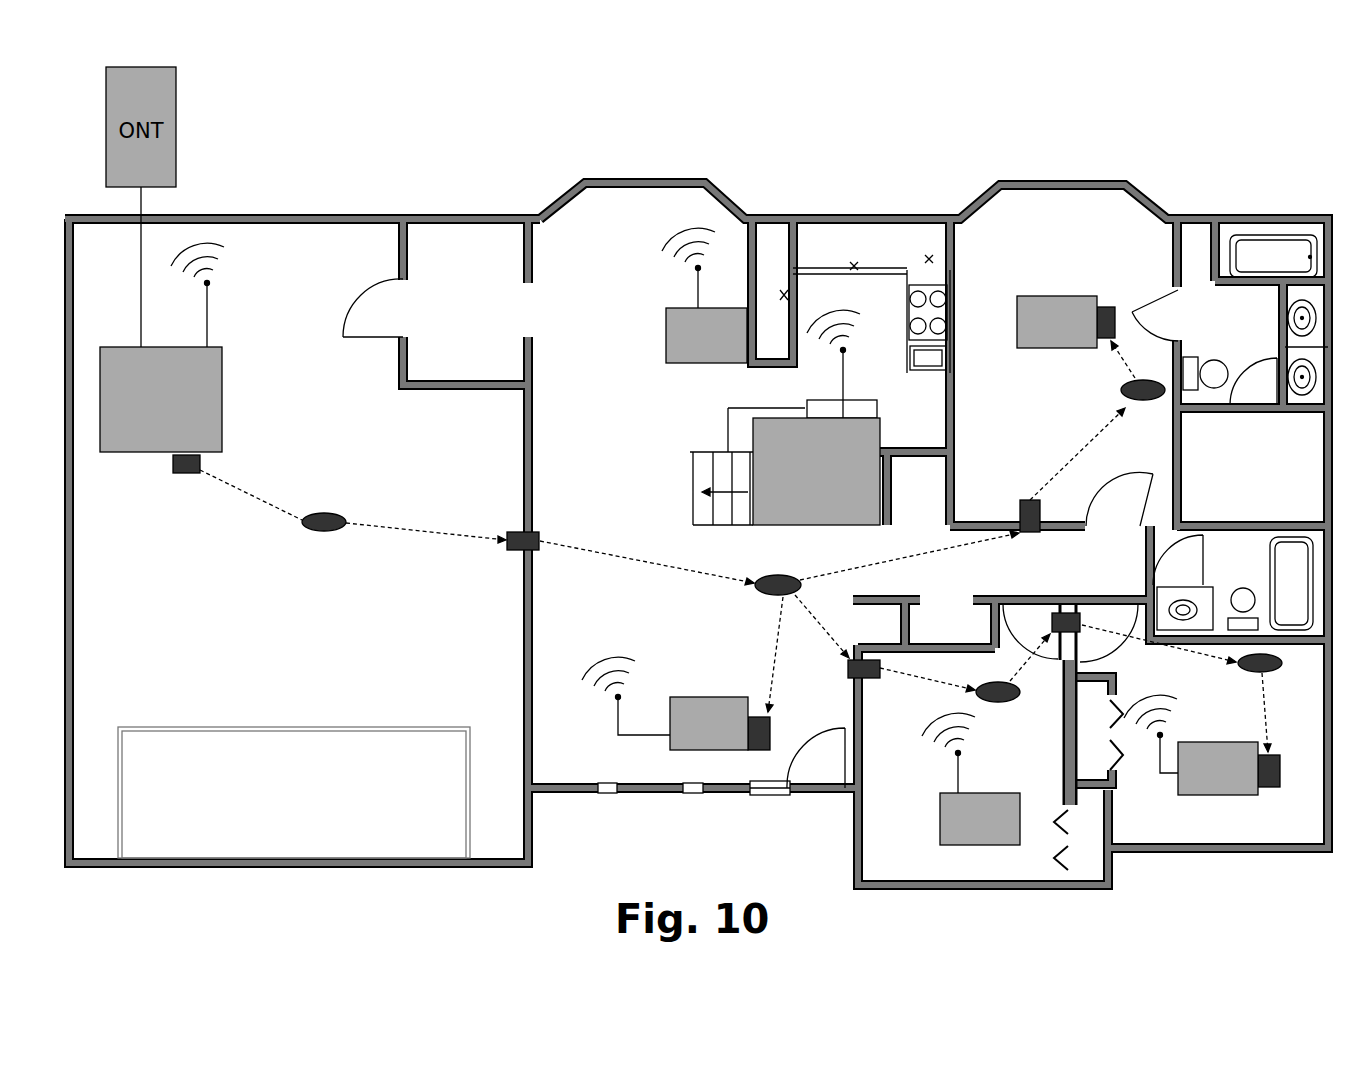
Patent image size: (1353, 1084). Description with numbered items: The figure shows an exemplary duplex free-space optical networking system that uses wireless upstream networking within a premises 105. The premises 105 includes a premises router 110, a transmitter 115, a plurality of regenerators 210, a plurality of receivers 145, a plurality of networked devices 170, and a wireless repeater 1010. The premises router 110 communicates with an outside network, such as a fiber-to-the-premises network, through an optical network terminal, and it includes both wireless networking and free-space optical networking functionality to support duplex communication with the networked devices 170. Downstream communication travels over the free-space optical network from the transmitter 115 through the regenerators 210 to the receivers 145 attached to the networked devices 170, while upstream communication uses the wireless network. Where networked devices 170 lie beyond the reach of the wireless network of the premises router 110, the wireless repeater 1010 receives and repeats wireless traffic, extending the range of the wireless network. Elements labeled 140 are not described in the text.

The premises 105 is at (790, 197).
The premises router 110 is at (162, 347).
The transmitter 115 is at (178, 480).
The coaxial splitter 140 is at (327, 510).
The receivers 145 is at (1120, 300).
The networked devices 170 is at (920, 536).
The regenerators 210 is at (541, 527).
The wireless repeater 1010 is at (816, 417).